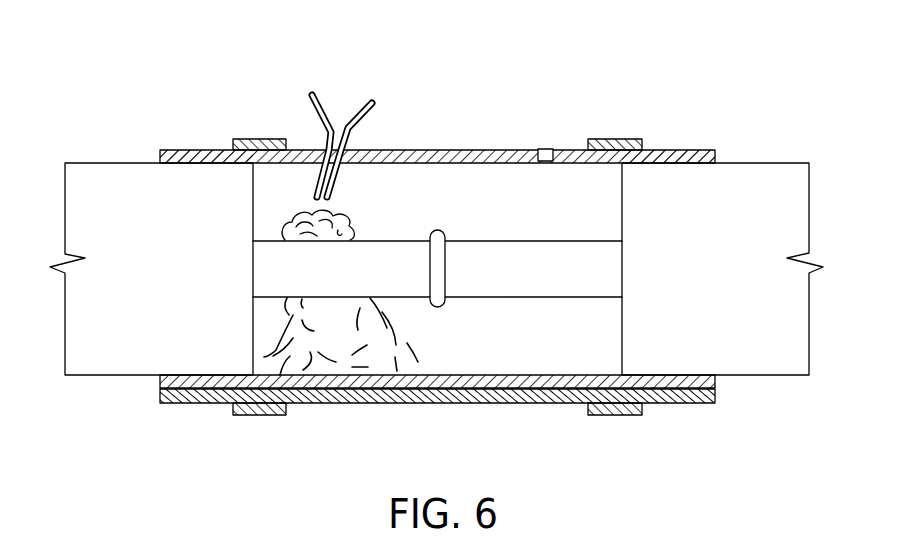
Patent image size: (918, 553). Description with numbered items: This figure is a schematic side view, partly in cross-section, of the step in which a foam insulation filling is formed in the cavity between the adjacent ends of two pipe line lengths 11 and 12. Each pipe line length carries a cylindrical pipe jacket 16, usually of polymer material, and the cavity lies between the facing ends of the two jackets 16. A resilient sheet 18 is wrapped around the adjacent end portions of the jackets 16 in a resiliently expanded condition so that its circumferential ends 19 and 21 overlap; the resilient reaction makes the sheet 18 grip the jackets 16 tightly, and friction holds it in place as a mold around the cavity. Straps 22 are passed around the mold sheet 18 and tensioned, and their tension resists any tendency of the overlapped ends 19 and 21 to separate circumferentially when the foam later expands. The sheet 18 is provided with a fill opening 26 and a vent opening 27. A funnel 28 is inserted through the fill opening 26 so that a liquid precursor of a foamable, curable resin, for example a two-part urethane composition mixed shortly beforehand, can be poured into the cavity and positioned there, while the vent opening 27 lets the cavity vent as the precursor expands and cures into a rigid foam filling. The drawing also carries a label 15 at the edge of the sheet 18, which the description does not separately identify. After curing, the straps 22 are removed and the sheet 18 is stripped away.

The pipe line length 11 is at (178, 104).
The pipe line length 12 is at (708, 88).
The cover plate end portion 15 is at (192, 150).
The cylindrical pipe jacket 16 is at (130, 197).
The resilient sheet 18 is at (417, 150).
The end of the sheet 19 is at (373, 397).
The end of the sheet 21 is at (337, 390).
The strap 22 is at (248, 139).
The fill opening 26 is at (322, 147).
The vent opening 27 is at (543, 150).
The funnel 28 is at (361, 106).